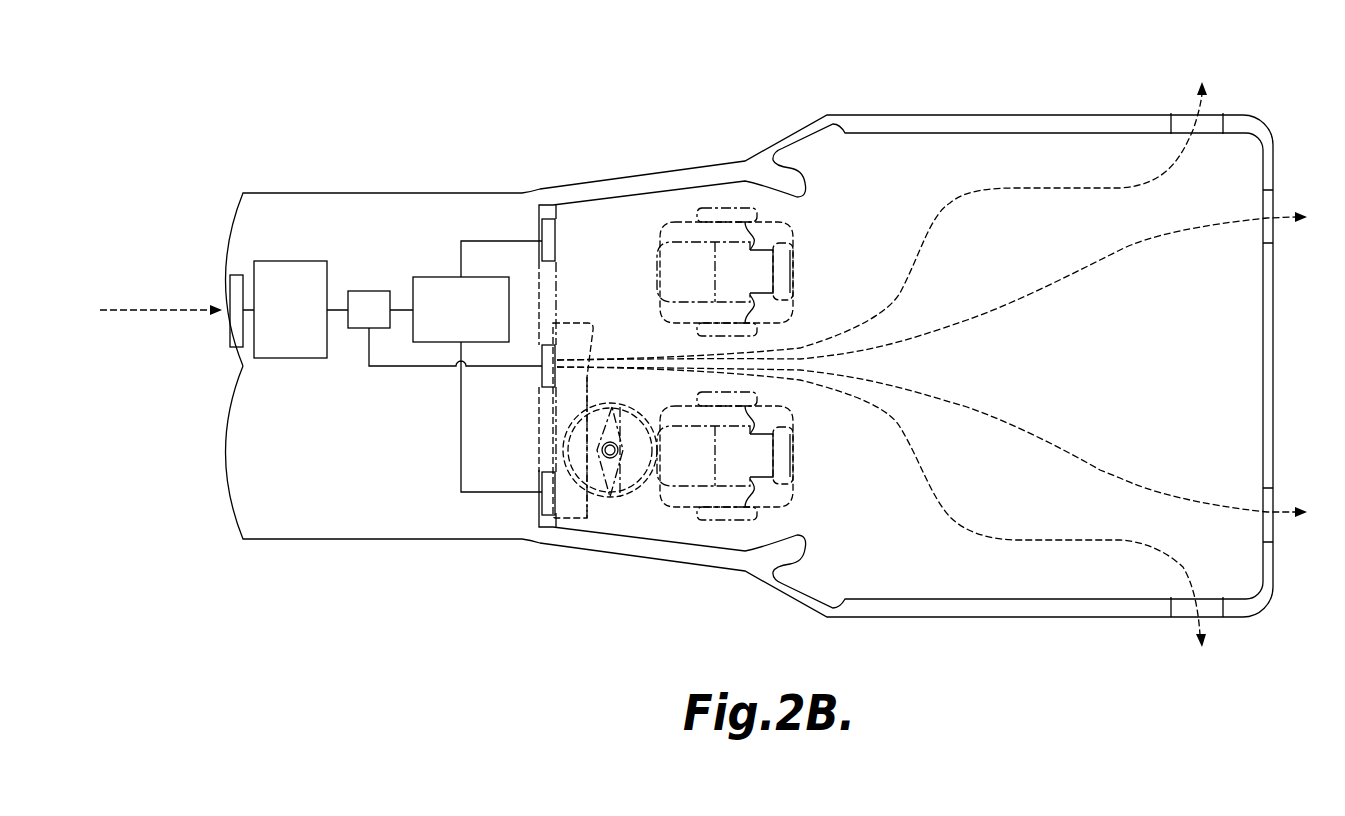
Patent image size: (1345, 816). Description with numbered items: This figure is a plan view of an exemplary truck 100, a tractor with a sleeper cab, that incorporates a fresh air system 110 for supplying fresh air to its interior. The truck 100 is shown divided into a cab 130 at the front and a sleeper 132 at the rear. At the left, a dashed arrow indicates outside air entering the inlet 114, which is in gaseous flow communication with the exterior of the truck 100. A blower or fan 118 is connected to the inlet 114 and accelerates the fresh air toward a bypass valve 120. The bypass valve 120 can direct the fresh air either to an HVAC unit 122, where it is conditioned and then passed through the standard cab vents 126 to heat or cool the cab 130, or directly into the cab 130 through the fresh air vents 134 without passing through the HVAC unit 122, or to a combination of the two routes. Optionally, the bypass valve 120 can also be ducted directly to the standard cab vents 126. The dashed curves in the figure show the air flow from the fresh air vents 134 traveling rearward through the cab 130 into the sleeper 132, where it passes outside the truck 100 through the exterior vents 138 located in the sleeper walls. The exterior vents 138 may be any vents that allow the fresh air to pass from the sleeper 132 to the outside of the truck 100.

The truck 100 is at (506, 79).
The fresh air system 110 is at (368, 372).
The inlet 114 is at (233, 349).
The blower or fan 118 is at (306, 322).
The bypass valve 120 is at (385, 322).
The HVAC unit 122 is at (476, 322).
The standard cab vents 126 is at (542, 232).
The cab 130 is at (646, 213).
The sleeper 132 is at (1010, 157).
The fresh air vents 134 is at (540, 375).
The exterior vents 138 is at (1185, 117).